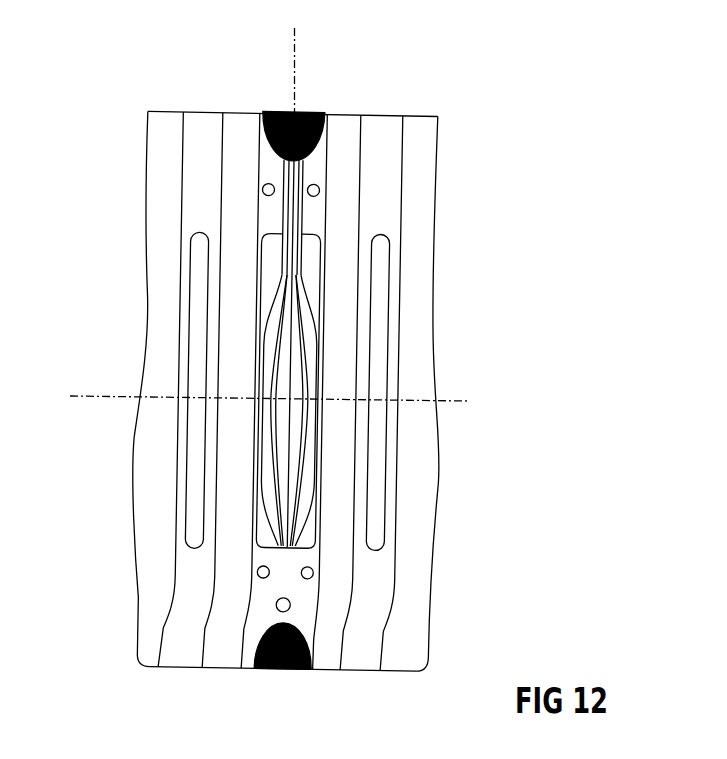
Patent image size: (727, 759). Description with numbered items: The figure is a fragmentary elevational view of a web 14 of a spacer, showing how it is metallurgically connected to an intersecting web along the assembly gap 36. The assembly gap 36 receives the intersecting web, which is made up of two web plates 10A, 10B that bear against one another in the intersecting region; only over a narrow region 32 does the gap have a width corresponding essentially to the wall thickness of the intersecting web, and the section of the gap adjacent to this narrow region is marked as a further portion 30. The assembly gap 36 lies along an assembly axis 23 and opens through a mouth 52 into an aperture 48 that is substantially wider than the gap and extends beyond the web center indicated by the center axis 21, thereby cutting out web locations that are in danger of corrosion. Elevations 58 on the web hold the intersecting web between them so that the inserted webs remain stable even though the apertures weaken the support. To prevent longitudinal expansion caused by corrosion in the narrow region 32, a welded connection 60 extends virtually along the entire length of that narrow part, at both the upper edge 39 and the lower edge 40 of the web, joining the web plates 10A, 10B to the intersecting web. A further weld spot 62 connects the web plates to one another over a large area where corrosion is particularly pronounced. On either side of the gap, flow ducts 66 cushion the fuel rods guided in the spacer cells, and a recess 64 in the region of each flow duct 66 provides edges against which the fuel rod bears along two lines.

The web 14 is at (135, 622).
The lower edge 40 is at (347, 116).
The upper edge 39 is at (327, 670).
The flow duct 66 is at (177, 487).
The recess 64 is at (192, 292).
The mouth 52 is at (307, 228).
The assembly gap 36 is at (302, 210).
The web plate 10B is at (273, 253).
The web plate 10A is at (305, 255).
The aperture 48 is at (263, 547).
The elevation 58 is at (274, 185).
The weld spot 62 is at (290, 607).
The welded connection 60 is at (283, 112).
The assembly axis 23 is at (298, 58).
The center axis 21 is at (93, 396).
The narrow region of assembly gap 32 is at (252, 119).
The lower section 30 is at (253, 235).